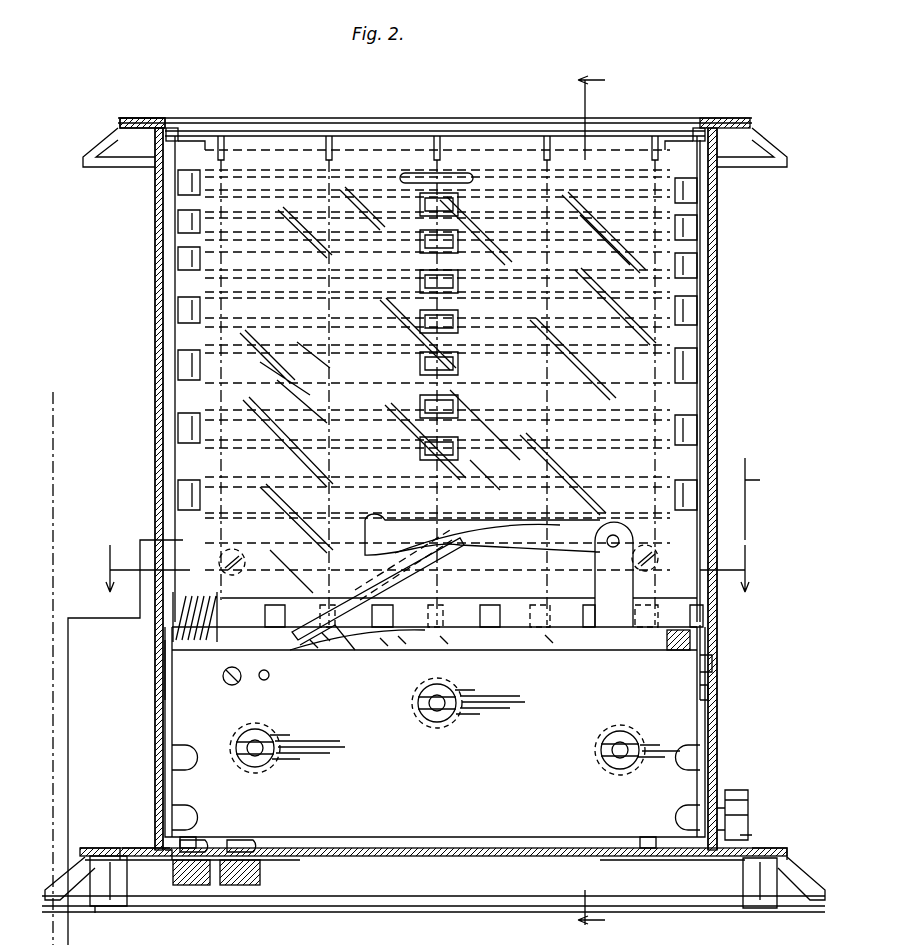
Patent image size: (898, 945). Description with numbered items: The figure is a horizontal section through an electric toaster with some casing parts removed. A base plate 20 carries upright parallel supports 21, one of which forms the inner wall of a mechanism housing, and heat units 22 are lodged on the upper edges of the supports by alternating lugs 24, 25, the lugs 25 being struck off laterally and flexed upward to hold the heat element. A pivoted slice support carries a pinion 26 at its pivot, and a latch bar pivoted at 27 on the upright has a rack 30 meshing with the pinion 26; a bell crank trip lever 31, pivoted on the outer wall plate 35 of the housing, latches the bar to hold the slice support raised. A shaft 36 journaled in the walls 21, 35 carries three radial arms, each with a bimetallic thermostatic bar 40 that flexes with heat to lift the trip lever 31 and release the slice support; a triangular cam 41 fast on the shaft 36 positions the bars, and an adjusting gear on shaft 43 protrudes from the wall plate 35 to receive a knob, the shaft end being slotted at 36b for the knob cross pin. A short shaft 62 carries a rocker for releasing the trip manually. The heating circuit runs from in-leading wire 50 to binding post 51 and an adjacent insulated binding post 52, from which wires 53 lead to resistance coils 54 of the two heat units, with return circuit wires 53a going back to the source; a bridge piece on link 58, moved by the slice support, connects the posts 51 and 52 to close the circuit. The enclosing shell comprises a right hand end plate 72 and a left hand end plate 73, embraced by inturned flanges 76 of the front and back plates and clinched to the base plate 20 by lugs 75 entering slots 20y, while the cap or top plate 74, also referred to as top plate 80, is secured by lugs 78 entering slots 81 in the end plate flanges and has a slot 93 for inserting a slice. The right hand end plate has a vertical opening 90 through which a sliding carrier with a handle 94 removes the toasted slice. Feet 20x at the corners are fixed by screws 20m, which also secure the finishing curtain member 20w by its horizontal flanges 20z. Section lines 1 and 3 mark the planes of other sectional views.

The section line 1 is at (600, 508).
The section line 3 is at (427, 564).
The base plate 20 is at (385, 857).
The screws 20m is at (122, 848).
The finishing curtain member 20w is at (55, 890).
The feet 20x is at (110, 906).
The slots 20y is at (172, 857).
The horizontal flanges 20z is at (122, 848).
The parallel supports 21 is at (165, 680).
The heat units 22 is at (678, 468).
The lugs 24 is at (395, 650).
The lugs 25 is at (488, 628).
The pinion 26 is at (705, 668).
The pivot 27 is at (259, 680).
The rack 30 is at (705, 692).
The bell crank trip lever 31 is at (522, 553).
The outer wall plate 35 is at (445, 803).
The shaft 36 is at (448, 720).
The slot 36b is at (505, 708).
The thermostatic bar 40 is at (390, 586).
The polygonal cam 41 is at (425, 640).
The shaft 43 is at (260, 768).
The in-leading wire 50 is at (95, 913).
The binding post 51 is at (195, 885).
The insulated binding post 52 is at (242, 885).
The wires 53 is at (68, 680).
The return circuit wires 53a is at (769, 499).
The resistance coils 54 is at (222, 553).
The link 58 is at (218, 637).
The short shaft 62 is at (632, 740).
The right hand end plate 72 is at (717, 232).
The left hand end plate 73 is at (155, 222).
The cap or top plate 74 is at (165, 128).
The lugs 75 is at (180, 840).
The inturned flanges 76 is at (155, 290).
The lugs 78 is at (175, 132).
The cap or top plate 80 is at (120, 133).
The slots 81 is at (165, 118).
The vertically extended opening 90 is at (708, 392).
The slot 93 is at (352, 118).
The handle 94 is at (750, 798).